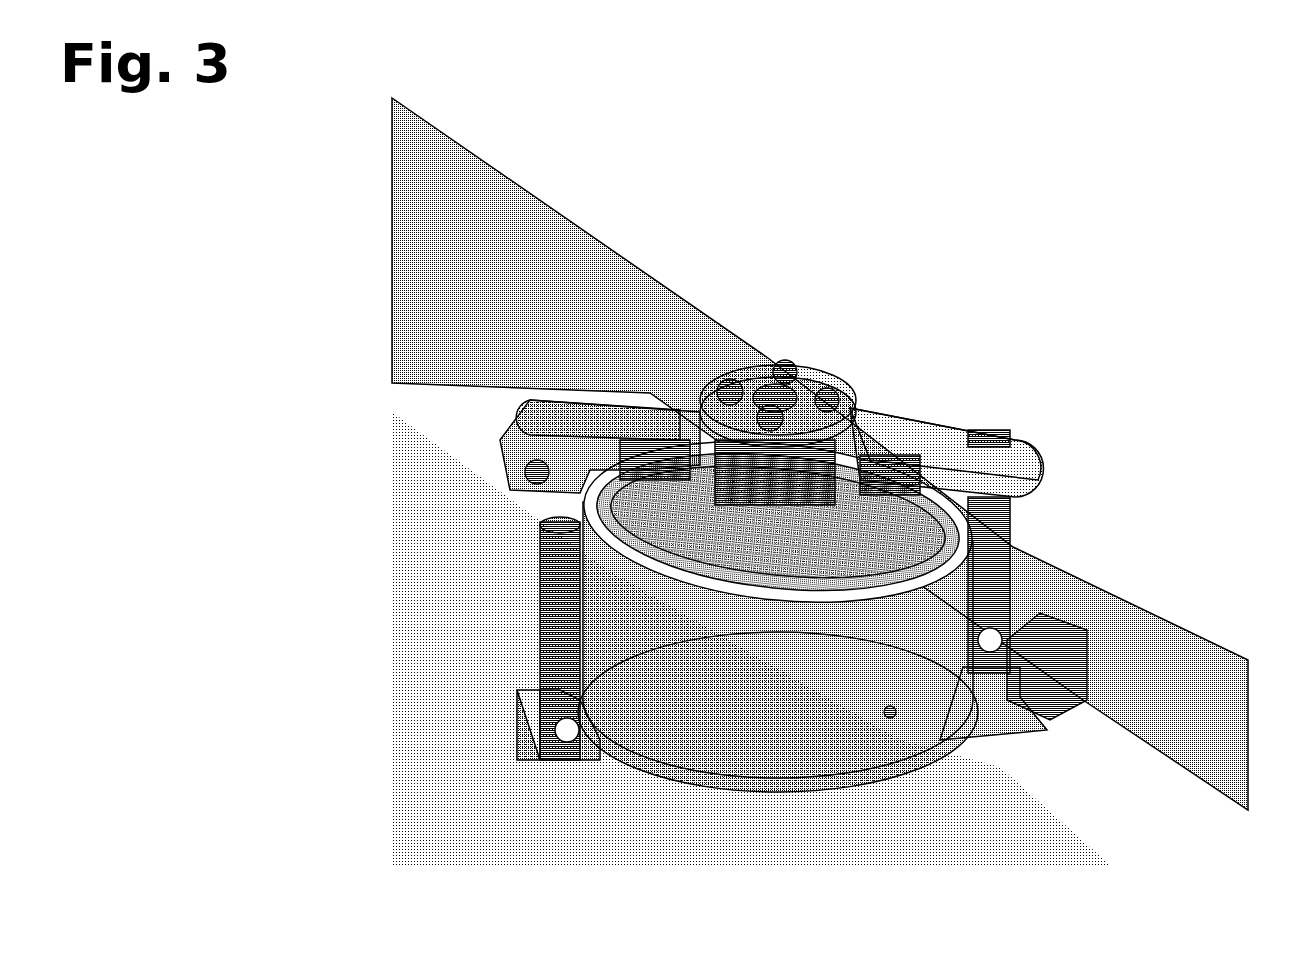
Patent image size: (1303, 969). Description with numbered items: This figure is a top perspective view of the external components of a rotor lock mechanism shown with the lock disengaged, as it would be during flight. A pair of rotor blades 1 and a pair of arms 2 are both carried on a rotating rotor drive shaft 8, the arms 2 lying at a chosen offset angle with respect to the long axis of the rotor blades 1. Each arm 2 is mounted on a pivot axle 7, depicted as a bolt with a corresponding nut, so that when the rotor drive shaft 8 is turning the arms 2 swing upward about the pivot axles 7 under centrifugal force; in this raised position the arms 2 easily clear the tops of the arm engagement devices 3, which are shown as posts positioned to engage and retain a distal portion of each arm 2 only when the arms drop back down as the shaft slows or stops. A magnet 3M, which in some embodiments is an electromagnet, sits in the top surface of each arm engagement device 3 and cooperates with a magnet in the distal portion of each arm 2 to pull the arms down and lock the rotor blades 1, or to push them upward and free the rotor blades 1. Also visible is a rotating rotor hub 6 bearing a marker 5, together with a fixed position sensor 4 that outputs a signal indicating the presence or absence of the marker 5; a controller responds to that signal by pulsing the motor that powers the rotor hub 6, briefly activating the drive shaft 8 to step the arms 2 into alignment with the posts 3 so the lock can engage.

The rotor blades 1 is at (527, 235).
The arms 2 is at (520, 420).
The arm engagement device 3 is at (1000, 520).
The magnet 3M is at (990, 437).
The fixed position sensor 4 is at (1018, 683).
The marker 5 is at (890, 715).
The rotor hub 6 is at (730, 680).
The pivot axle 7 is at (648, 470).
The rotor drive shaft 8 is at (770, 390).